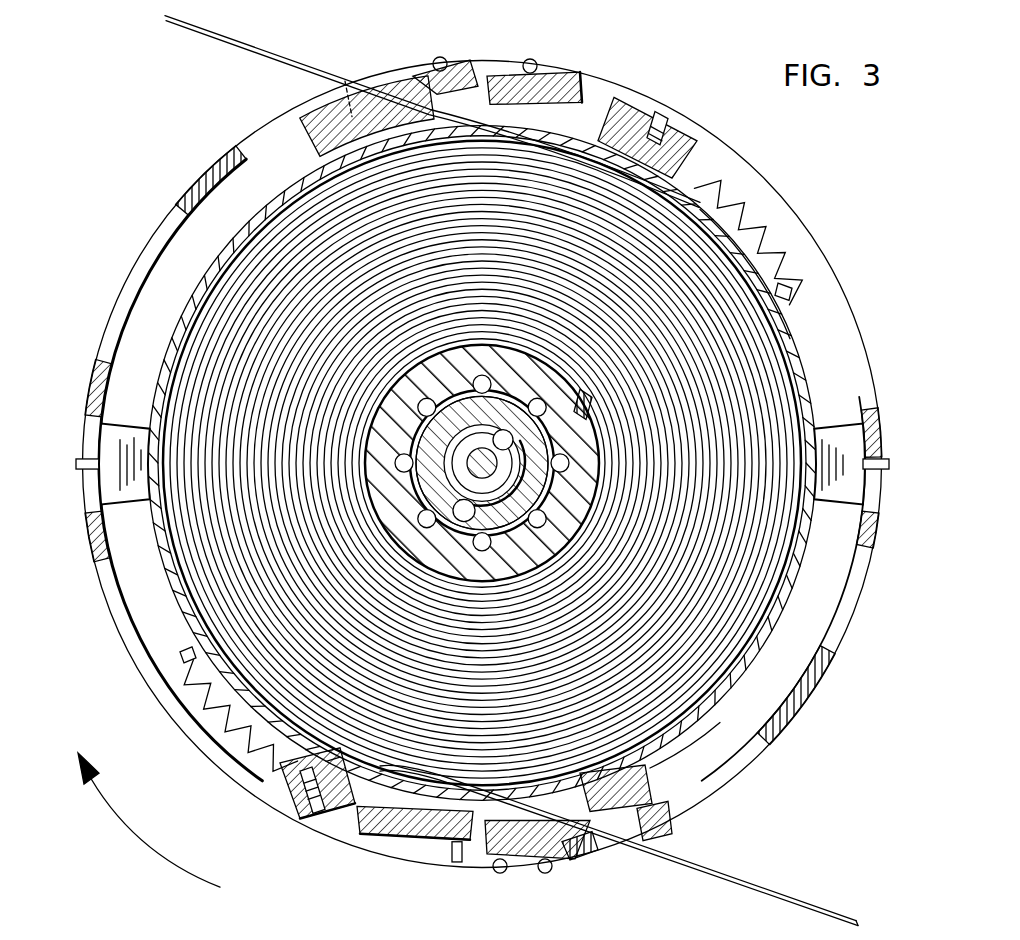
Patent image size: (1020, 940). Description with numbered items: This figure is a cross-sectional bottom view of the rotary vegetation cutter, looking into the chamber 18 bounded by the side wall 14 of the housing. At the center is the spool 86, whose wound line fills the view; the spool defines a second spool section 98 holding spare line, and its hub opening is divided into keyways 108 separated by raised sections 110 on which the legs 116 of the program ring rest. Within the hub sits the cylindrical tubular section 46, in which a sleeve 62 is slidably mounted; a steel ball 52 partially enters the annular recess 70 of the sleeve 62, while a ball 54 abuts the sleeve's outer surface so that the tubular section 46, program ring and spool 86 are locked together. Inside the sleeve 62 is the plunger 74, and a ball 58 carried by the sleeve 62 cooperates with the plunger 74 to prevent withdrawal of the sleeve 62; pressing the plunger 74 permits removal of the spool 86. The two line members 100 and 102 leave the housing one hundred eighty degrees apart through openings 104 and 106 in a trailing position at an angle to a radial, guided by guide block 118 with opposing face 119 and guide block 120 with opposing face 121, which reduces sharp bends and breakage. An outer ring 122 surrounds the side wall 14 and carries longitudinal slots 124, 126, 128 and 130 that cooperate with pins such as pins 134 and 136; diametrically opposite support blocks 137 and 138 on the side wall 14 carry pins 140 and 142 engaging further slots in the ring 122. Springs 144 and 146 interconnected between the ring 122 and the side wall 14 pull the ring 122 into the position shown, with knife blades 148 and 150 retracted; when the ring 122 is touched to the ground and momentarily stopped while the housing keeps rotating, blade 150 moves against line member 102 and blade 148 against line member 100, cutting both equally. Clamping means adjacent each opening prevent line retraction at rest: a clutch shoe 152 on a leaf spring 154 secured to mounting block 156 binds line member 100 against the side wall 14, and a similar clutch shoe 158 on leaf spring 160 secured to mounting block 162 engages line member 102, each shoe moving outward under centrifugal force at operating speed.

The side wall 14 is at (172, 336).
The chamber 18 is at (698, 712).
The cylindrical tubular section 46 is at (340, 372).
The steel ball 52 is at (367, 478).
The ball 54 is at (463, 513).
The ball 58 is at (595, 425).
The sleeve 62 is at (548, 470).
The annular recess 70 is at (590, 438).
The plunger 74 is at (572, 500).
The spool 86 is at (712, 198).
The second spool section 98 is at (335, 200).
The line member 100 is at (812, 878).
The line member 102 is at (198, 26).
The opening 104 is at (300, 810).
The opening 106 is at (650, 110).
The keyways 108 is at (445, 556).
The raised section 110 is at (400, 321).
The legs 116 is at (380, 337).
The guide block 118 is at (352, 100).
The opposing face 119 is at (400, 76).
The guide block 120 is at (655, 790).
The opposing face 121 is at (562, 860).
The outer ring 122 is at (207, 178).
The longitudinal slot 124 is at (412, 854).
The longitudinal slot 126 is at (615, 826).
The longitudinal slot 128 is at (362, 62).
The longitudinal slot 130 is at (555, 74).
The pin 134 is at (458, 858).
The pin 136 is at (665, 820).
The support block 137 is at (850, 455).
The support block 138 is at (105, 445).
The pin 140 is at (889, 464).
The pin 142 is at (88, 462).
The spring 144 is at (760, 245).
The spring 146 is at (180, 684).
The knife blade 148 is at (522, 855).
The knife blade 150 is at (445, 60).
The clutch shoe 152 is at (315, 830).
The leaf spring 154 is at (358, 838).
The mounting block 156 is at (268, 776).
The clutch shoe 158 is at (590, 76).
The leaf spring 160 is at (625, 94).
The mounting block 162 is at (685, 135).